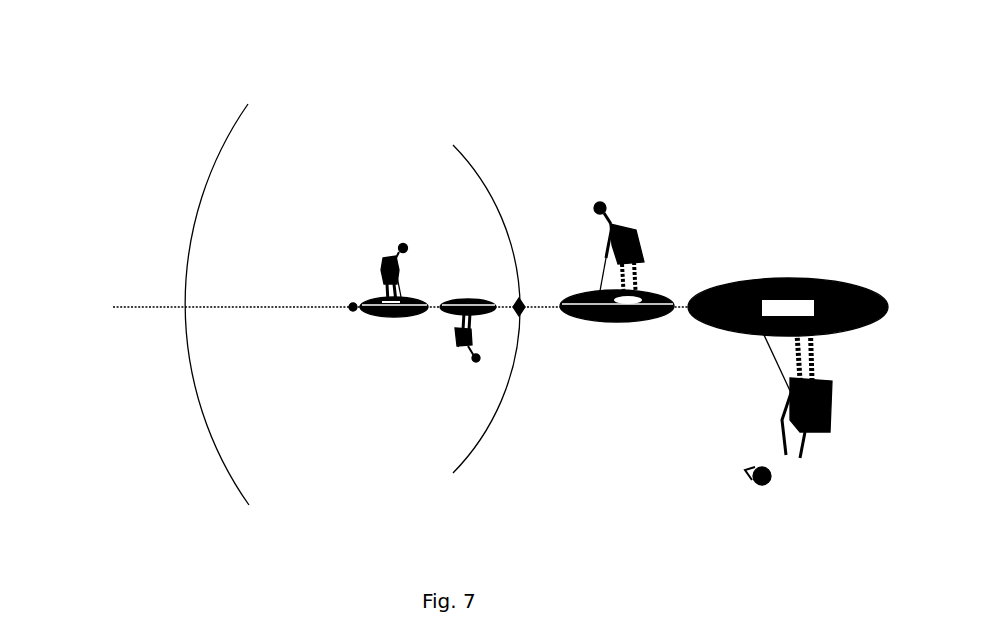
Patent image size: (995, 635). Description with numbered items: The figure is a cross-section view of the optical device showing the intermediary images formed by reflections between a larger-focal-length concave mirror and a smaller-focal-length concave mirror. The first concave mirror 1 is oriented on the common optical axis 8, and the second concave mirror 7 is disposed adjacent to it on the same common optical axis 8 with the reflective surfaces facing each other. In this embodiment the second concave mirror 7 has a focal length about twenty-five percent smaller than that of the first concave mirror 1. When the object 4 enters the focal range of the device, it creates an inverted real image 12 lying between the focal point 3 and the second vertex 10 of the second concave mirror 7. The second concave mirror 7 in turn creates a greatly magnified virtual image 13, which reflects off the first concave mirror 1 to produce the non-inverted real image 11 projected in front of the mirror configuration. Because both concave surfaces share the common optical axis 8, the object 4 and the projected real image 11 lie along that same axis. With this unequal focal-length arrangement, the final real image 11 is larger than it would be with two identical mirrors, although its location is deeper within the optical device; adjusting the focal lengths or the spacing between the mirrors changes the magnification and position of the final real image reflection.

The first concave mirror 1 is at (225, 137).
The focal point 3 is at (351, 308).
The object 4 is at (623, 215).
The second concave mirror 7 is at (460, 155).
The common optical axis 8 is at (140, 308).
The second vertex 10 is at (521, 313).
The real image 11 is at (383, 253).
The inverted real image 12 is at (460, 345).
The virtual image 13 is at (800, 460).